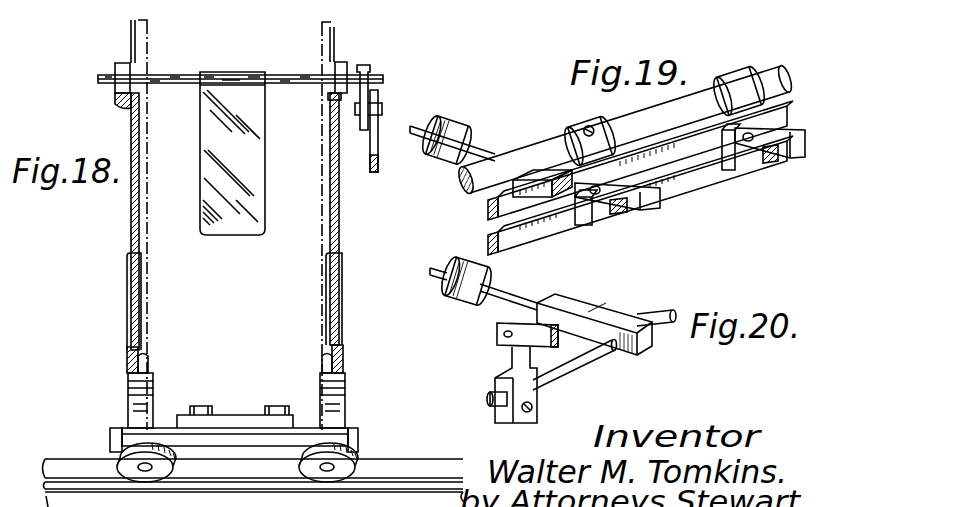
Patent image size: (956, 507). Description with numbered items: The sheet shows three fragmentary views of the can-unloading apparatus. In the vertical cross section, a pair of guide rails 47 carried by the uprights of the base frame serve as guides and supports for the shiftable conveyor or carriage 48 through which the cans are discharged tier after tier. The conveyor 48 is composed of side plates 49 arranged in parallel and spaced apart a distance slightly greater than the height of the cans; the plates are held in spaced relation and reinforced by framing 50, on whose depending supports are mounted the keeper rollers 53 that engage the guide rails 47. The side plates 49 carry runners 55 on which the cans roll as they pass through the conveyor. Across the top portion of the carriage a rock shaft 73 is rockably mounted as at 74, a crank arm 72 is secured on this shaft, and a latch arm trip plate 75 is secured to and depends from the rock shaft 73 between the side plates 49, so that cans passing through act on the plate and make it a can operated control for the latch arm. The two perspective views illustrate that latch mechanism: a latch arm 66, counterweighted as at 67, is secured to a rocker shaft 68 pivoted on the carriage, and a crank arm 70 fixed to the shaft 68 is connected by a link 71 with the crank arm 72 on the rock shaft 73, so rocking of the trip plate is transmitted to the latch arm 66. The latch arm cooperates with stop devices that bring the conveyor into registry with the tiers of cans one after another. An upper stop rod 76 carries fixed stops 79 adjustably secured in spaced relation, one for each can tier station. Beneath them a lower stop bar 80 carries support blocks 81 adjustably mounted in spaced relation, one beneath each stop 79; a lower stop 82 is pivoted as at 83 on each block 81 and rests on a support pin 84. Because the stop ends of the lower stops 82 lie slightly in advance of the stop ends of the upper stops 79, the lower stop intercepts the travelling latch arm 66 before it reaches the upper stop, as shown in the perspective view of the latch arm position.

In FIG. 18, the guide rails 47 is at (420, 447).
In FIG. 18, the shiftable conveyor 48 is at (349, 221).
In FIG. 18, the side plates 49 is at (131, 240).
In FIG. 18, the framing 50 is at (148, 395).
In FIG. 18, the keeper rollers 53 is at (118, 468).
In FIG. 18, the runners 55 is at (150, 358).
In FIG. 19, the latch arm 66 is at (533, 165).
In FIG. 20, the latch arm 66 is at (605, 300).
In FIG. 19, the counterweight 67 is at (451, 126).
In FIG. 20, the counterweight 67 is at (452, 300).
In FIG. 20, the rocker shaft 68 is at (658, 315).
In FIG. 20, the crank arm 70 is at (516, 358).
In FIG. 18, the link 71 is at (379, 125).
In FIG. 20, the link 71 is at (513, 347).
In FIG. 18, the crank arm 72 is at (370, 76).
In FIG. 18, the rock shaft 73 is at (300, 75).
In FIG. 18, the rock shaft mounting 74 is at (120, 63).
In FIG. 18, the latch arm trip plate 75 is at (262, 162).
In FIG. 19, the upper stop rod 76 is at (776, 67).
In FIG. 19, the fixed stops 79 is at (586, 127).
In FIG. 19, the lower stop bar 80 is at (488, 247).
In FIG. 19, the support blocks 81 is at (612, 212).
In FIG. 19, the lower stop 82 is at (577, 216).
In FIG. 19, the pivot 83 is at (600, 200).
In FIG. 19, the support pins 84 is at (622, 208).